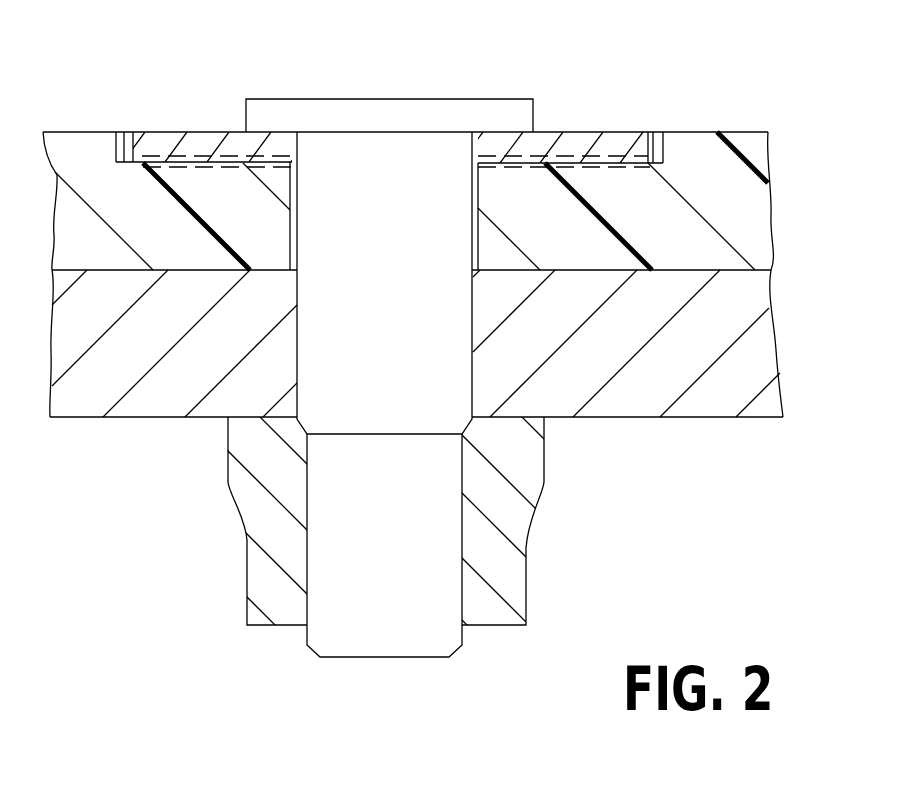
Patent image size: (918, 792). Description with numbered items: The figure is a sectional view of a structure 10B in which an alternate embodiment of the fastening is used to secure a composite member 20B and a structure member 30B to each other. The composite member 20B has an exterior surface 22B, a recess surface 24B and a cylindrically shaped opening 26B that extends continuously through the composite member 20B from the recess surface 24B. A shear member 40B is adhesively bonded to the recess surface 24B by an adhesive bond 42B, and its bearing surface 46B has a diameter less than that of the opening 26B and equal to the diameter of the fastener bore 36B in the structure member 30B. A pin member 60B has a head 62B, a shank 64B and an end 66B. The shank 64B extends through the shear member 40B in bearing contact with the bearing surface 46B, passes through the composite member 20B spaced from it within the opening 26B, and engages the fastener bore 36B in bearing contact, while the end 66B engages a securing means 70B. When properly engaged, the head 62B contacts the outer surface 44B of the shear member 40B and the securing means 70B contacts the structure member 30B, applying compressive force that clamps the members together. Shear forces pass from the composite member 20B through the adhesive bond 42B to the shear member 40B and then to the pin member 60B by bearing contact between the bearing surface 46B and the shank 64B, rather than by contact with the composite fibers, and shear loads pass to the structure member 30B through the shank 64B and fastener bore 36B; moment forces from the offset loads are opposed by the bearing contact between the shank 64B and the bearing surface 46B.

The structure 10B is at (683, 79).
The composite member 20B is at (774, 208).
The exterior surface 22B is at (740, 133).
The recess surface 24B is at (659, 134).
The cylindrically shaped opening 26B is at (480, 195).
The structure member 30B is at (776, 342).
The fastener bore 36B is at (480, 350).
The shear member 40B is at (177, 131).
The adhesive bond 42B is at (576, 162).
The outer surface 44B is at (396, 118).
The bearing surface 46B is at (285, 160).
The pin member 60B is at (470, 99).
The head 62B is at (389, 91).
The shank 64B is at (298, 238).
The end 66B is at (448, 658).
The securing means 70B is at (526, 602).